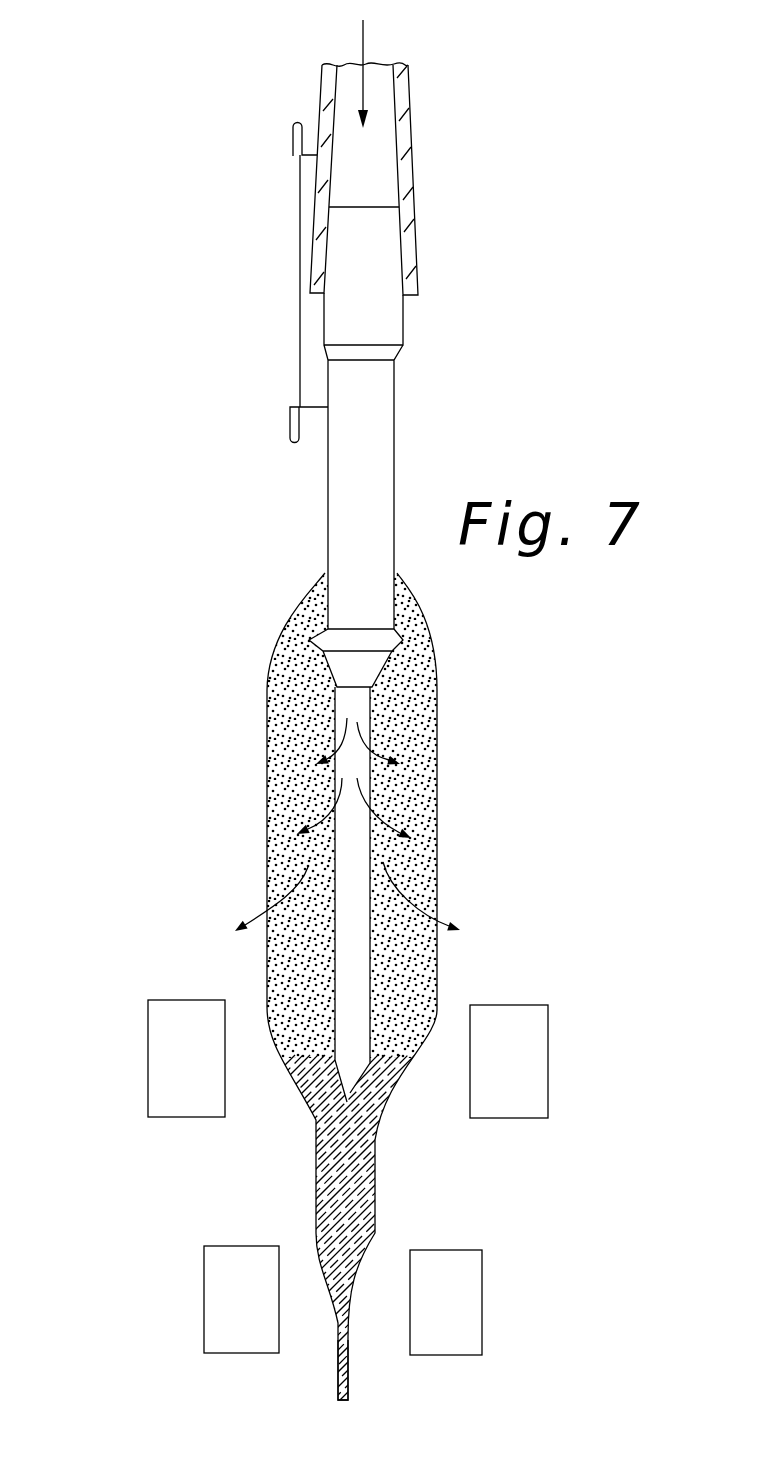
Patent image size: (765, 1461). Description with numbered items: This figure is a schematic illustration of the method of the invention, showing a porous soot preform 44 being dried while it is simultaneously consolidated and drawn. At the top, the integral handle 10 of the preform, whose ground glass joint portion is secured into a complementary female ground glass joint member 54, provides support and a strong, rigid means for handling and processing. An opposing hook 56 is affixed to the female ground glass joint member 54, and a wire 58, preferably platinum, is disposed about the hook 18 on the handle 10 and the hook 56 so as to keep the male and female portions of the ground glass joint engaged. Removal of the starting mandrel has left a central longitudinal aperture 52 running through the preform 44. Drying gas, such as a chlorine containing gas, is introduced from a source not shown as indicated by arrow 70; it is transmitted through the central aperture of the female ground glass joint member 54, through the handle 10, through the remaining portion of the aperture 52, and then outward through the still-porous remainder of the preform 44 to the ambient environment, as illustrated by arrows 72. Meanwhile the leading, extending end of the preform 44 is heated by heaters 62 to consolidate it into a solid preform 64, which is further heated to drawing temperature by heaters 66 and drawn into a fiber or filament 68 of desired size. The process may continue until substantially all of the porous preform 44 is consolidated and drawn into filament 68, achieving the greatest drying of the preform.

The handle 10 is at (409, 426).
The hook 18 is at (286, 424).
The preform 44 is at (437, 784).
The central longitudinal aperture 52 is at (369, 953).
The female ground glass joint member 54 is at (409, 107).
The hook 56 is at (290, 135).
The wire 58 is at (298, 230).
The heaters 62 is at (147, 1045).
The solid preform 64 is at (377, 1188).
The heaters 66 is at (203, 1286).
The fiber or filament 68 is at (337, 1377).
The arrow 70 is at (362, 35).
The arrows 72 is at (290, 895).